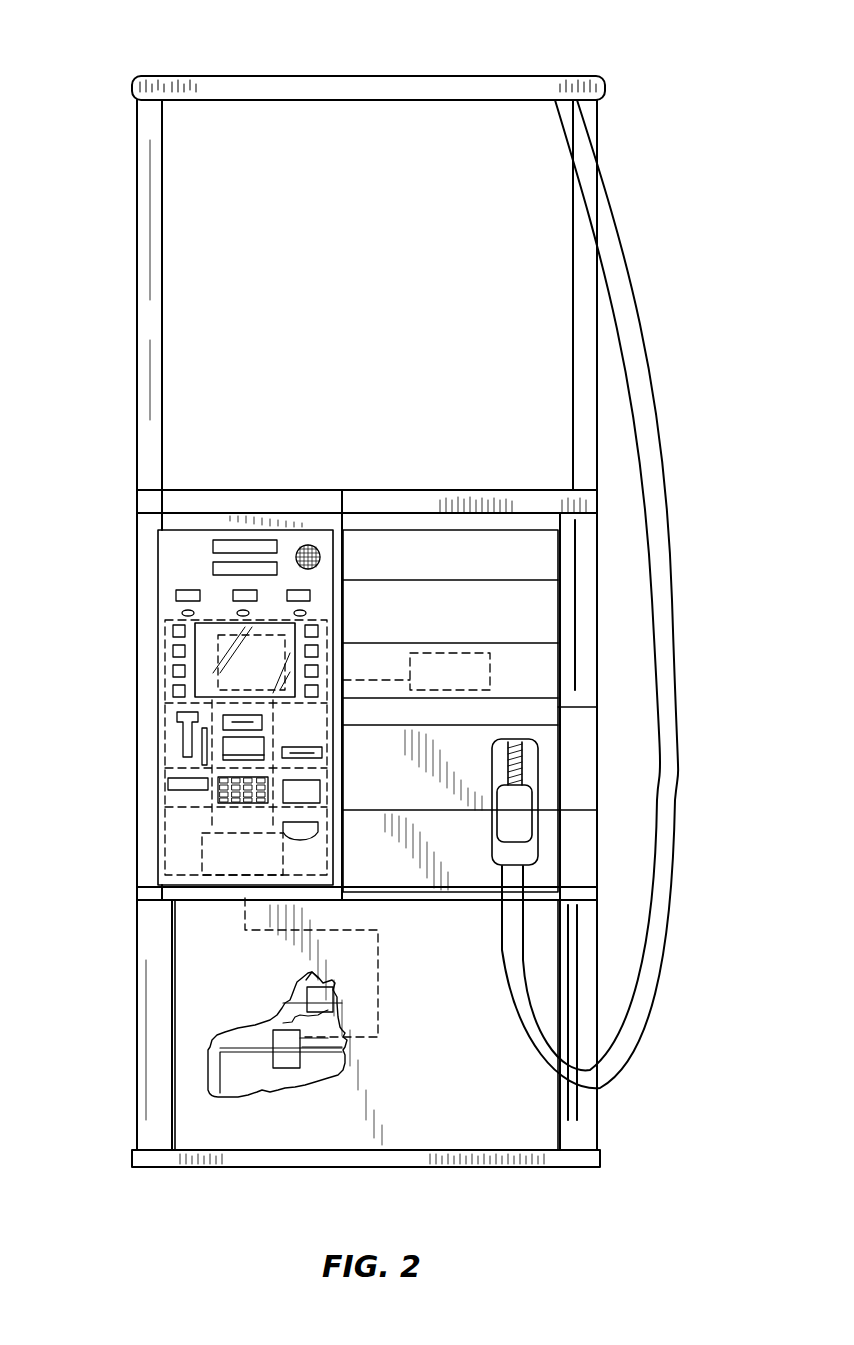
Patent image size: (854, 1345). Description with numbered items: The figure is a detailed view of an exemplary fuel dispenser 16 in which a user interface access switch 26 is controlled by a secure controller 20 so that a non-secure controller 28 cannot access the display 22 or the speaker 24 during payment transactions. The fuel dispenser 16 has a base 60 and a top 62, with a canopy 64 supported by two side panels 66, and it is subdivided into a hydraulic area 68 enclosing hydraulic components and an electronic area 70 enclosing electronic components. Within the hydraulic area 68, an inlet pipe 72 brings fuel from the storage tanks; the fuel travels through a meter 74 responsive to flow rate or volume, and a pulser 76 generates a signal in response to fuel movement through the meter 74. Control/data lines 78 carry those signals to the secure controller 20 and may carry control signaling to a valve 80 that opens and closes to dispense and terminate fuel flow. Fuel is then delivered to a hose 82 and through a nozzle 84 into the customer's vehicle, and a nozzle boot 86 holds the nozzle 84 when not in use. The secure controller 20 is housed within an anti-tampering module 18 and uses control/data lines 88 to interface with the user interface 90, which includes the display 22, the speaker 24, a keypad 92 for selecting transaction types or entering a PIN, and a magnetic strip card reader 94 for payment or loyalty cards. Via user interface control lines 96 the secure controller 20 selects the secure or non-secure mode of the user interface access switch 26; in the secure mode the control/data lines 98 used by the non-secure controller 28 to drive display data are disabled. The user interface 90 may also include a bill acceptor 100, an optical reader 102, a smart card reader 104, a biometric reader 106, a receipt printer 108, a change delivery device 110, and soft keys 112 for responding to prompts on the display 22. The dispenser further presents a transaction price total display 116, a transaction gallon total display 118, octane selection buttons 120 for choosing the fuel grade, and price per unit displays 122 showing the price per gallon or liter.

The fuel dispenser 16 is at (617, 61).
The anti-tampering module 18 is at (165, 832).
The secure controller 20 is at (255, 863).
The display 22 is at (215, 645).
The speaker 24 is at (310, 542).
The user interface access switch 26 is at (262, 676).
The non-secure controller 28 is at (465, 682).
The base 60 is at (422, 1170).
The top 62 is at (428, 490).
The canopy 64 is at (445, 76).
The side panels 66 is at (138, 305).
The hydraulic area 68 is at (525, 1129).
The electronic area 70 is at (524, 568).
The inlet pipe 72 is at (210, 1060).
The meter 74 is at (307, 1000).
The pulser 76 is at (312, 975).
The control/data lines 78 is at (380, 950).
The valve 80 is at (286, 1068).
The hose 82 is at (667, 708).
The nozzle 84 is at (515, 800).
The nozzle boot 86 is at (535, 850).
The control/data lines 88 is at (195, 604).
The user interface 90 is at (110, 632).
The keypad 92 is at (220, 803).
The magnetic strip card reader 94 is at (180, 725).
The user interface control lines 96 is at (282, 748).
The control/data lines 98 is at (385, 678).
The bill acceptor 100 is at (230, 716).
The optical reader 102 is at (262, 747).
The smart card reader 104 is at (320, 796).
The biometric reader 106 is at (312, 757).
The receipt printer 108 is at (175, 781).
The change delivery device 110 is at (318, 830).
The soft keys 112 is at (172, 657).
The transaction price total display 116 is at (213, 546).
The transaction gallon total display 118 is at (213, 568).
The octane selection buttons 120 is at (308, 591).
The price per unit (PPU) displays 122 is at (306, 611).